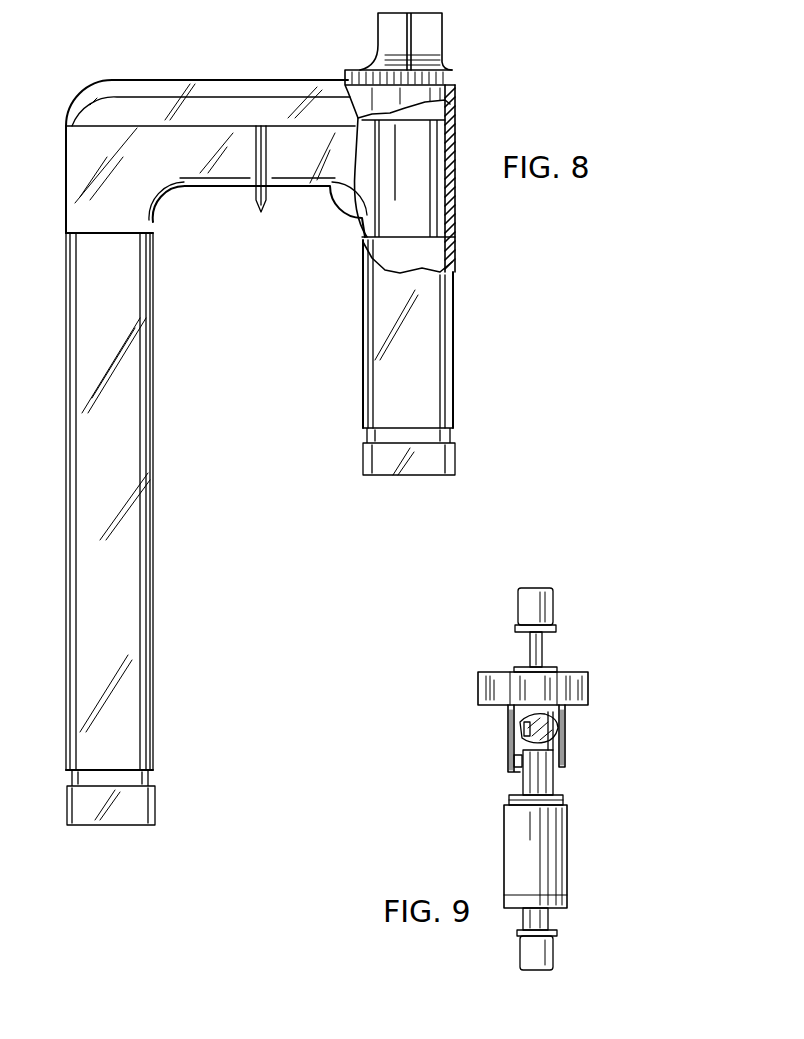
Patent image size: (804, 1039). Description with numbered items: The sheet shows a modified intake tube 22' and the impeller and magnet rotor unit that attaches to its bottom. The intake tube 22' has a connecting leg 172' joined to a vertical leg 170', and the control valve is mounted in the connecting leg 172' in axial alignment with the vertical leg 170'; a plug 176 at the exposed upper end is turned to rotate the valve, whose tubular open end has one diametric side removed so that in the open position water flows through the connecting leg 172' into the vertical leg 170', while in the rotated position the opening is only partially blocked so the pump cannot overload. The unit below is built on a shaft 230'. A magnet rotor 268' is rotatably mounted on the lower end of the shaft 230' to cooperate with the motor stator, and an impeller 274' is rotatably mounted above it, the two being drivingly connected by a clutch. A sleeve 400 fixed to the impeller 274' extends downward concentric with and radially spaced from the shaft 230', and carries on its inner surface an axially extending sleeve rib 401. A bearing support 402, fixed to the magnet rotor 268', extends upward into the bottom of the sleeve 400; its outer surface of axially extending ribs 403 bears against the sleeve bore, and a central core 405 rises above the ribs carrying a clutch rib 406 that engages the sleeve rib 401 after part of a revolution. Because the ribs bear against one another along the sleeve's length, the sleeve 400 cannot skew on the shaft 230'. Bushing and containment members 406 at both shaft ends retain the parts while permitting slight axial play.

In FIG. 8, the intake tube 22' is at (260, 418).
In FIG. 8, the connecting leg 172' is at (216, 134).
In FIG. 8, the plug 176 is at (445, 61).
In FIG. 8, the vertical leg 170' is at (449, 357).
In FIG. 9, the clutch rib 406 is at (553, 610).
In FIG. 9, the shaft 230' is at (536, 682).
In FIG. 9, the impeller 274' is at (578, 688).
In FIG. 9, the sleeve 400 is at (508, 742).
In FIG. 9, the sleeve rib 401 is at (556, 727).
In FIG. 9, the central core 405 is at (548, 745).
In FIG. 9, the axially extending ribs 403 is at (536, 781).
In FIG. 9, the bearing support 402 is at (563, 783).
In FIG. 9, the magnet rotor 268' is at (572, 867).